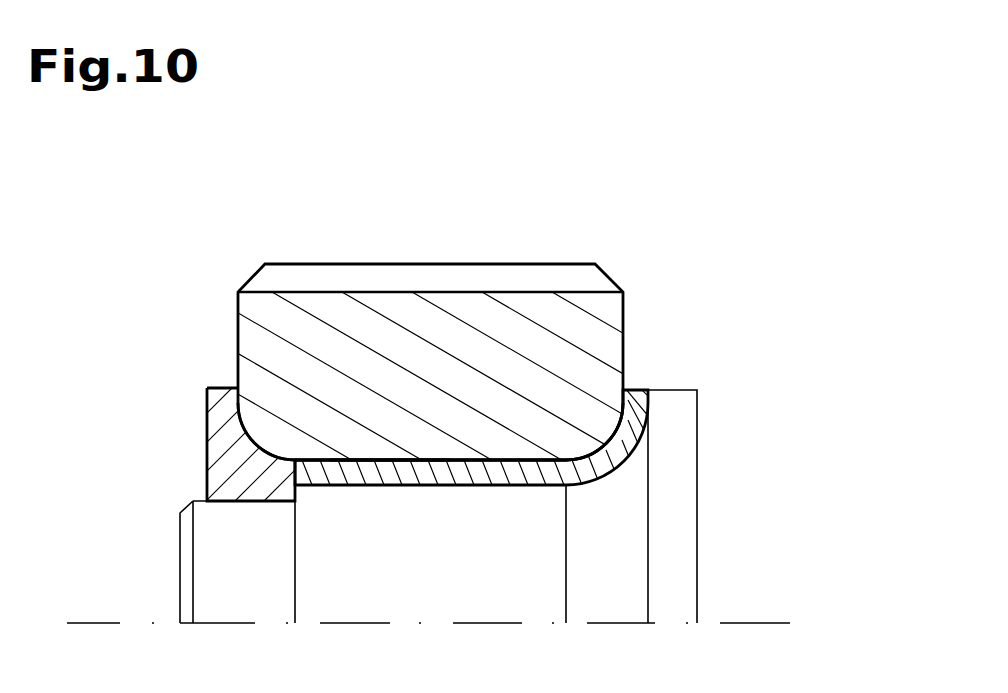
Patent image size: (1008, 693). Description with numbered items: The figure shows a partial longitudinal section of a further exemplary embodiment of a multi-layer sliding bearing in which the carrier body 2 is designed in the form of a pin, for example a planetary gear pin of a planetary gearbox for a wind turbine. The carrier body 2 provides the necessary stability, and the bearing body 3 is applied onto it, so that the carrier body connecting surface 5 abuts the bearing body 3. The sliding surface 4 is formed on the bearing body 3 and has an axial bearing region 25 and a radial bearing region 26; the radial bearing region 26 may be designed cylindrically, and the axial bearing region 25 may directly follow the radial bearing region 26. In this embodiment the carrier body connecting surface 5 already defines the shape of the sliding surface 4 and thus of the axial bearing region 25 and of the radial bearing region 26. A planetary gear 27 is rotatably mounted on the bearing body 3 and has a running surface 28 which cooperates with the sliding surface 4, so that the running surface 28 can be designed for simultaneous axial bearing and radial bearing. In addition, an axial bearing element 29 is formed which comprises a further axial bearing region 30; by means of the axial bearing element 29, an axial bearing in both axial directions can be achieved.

The carrier body 2 is at (612, 552).
The bearing body 3 is at (556, 487).
The sliding surface 4 is at (537, 455).
The carrier body connecting surface 5 is at (390, 458).
The axial bearing region 25 is at (605, 418).
The radial bearing region 26 is at (465, 440).
The planetary gear 27 is at (549, 325).
The running surface 28 is at (420, 462).
The axial bearing element 29 is at (222, 452).
The further axial bearing region 30 is at (256, 424).